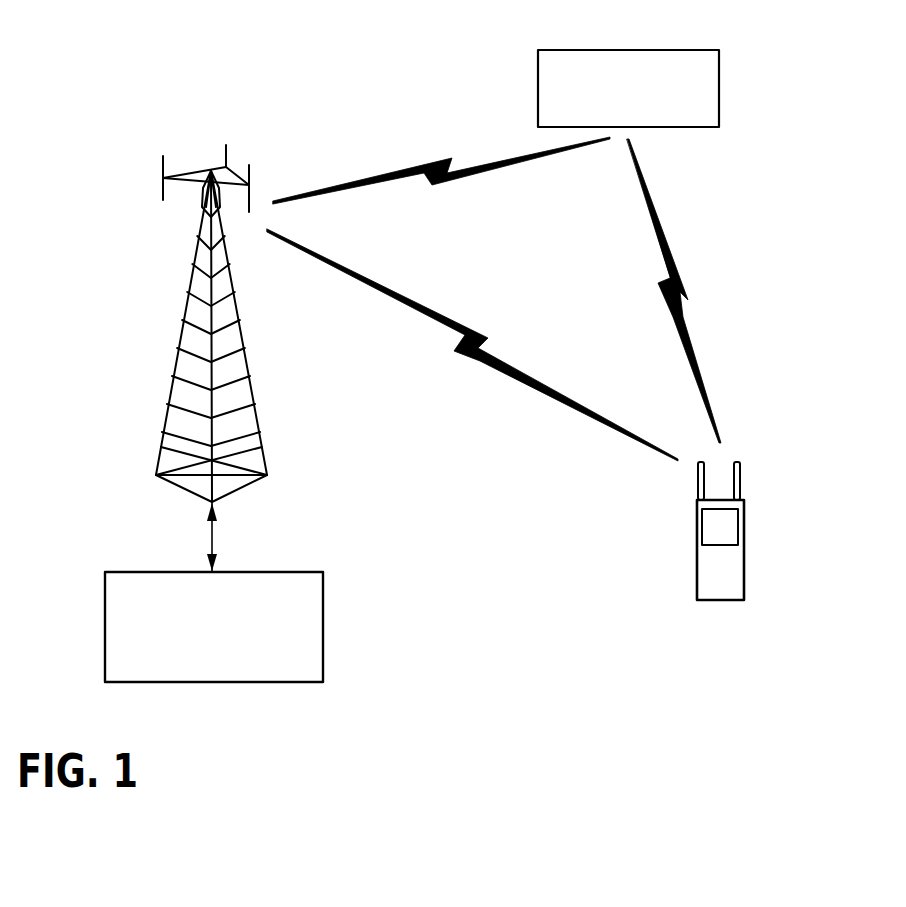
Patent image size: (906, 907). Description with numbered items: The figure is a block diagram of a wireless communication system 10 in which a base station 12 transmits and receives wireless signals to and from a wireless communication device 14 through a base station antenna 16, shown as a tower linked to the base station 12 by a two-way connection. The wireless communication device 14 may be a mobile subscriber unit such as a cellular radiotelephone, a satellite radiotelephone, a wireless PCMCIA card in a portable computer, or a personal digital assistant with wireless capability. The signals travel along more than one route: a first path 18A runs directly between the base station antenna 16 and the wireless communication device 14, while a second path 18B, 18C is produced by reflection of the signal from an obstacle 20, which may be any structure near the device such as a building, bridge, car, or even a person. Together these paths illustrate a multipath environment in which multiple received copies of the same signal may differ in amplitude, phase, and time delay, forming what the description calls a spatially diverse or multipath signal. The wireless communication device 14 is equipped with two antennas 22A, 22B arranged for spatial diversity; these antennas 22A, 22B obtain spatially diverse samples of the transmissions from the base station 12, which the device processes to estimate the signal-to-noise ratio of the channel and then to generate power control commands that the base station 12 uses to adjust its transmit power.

The wireless communication system 10 is at (151, 64).
The base station 12 is at (200, 652).
The wireless communication device 14 is at (762, 555).
The base station antenna 16 is at (271, 454).
The first path 18A is at (386, 287).
The second path 18B is at (404, 166).
The second path 18C is at (650, 192).
The obstacle 20 is at (615, 114).
The antenna 22A is at (698, 482).
The antenna 22B is at (743, 482).